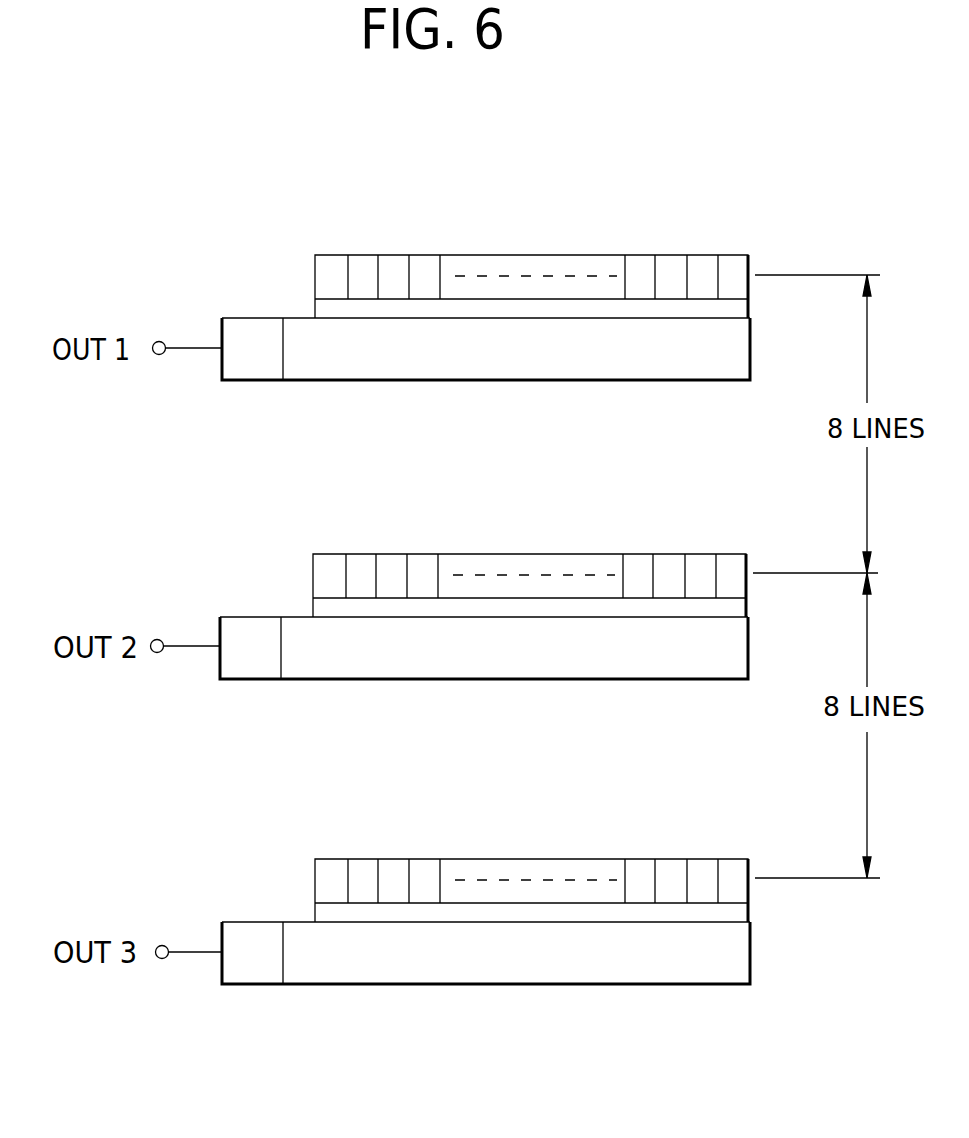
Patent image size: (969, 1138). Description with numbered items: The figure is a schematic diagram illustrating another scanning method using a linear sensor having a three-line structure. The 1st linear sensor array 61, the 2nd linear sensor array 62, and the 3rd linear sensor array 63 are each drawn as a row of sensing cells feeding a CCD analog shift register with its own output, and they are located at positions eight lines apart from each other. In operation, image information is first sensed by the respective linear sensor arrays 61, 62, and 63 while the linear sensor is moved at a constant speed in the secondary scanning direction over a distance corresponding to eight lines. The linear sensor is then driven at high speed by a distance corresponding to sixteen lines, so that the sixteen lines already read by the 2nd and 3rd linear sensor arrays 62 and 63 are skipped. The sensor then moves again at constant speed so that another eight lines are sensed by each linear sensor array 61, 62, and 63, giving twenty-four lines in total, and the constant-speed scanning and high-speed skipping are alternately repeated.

The 1st linear sensor array 61 is at (639, 248).
The 2nd linear sensor array 62 is at (646, 548).
The 3rd linear sensor array 63 is at (654, 853).